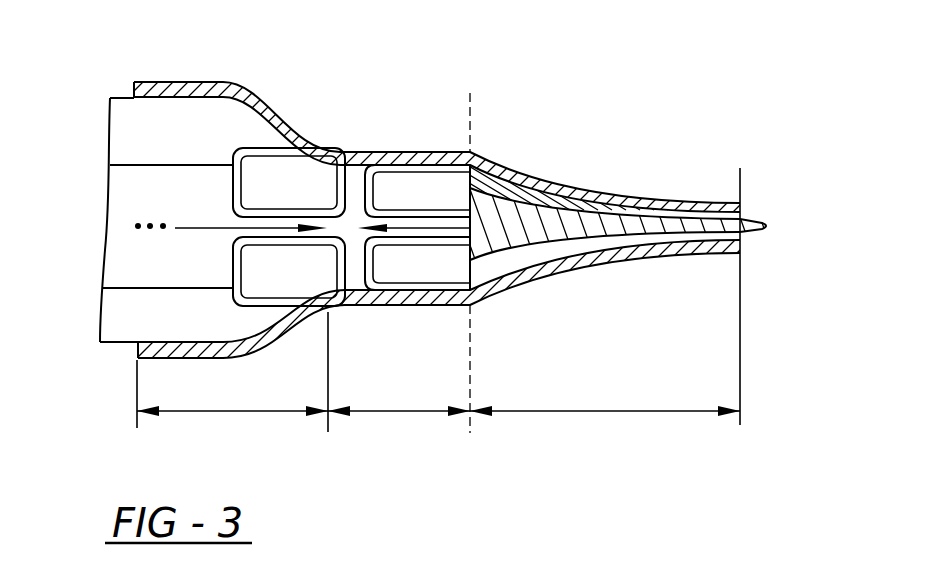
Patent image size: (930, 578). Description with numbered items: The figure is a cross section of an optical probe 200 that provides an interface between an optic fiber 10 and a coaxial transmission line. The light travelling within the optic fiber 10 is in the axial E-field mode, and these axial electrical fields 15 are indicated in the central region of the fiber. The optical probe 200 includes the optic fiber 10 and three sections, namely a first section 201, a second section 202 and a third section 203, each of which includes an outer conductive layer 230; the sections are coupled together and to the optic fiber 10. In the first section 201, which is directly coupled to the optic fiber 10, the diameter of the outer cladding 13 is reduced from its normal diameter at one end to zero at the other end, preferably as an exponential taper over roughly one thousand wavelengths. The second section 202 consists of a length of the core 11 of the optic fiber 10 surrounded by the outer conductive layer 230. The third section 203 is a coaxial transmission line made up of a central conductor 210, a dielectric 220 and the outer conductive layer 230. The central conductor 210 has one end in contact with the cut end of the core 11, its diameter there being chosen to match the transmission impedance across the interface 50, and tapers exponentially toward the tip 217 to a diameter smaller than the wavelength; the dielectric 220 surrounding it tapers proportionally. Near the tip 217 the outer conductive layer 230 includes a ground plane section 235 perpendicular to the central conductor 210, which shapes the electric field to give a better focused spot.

The optic fiber 10 is at (115, 76).
The core 11 is at (95, 229).
The outer cladding 13 is at (95, 133).
The axial electrical fields 15 is at (393, 188).
The interface 50 is at (470, 120).
The optical probe 200 is at (625, 242).
The first section 201 is at (224, 411).
The second section 202 is at (382, 411).
The third section 203 is at (585, 411).
The central conductor 210 is at (578, 232).
The tip 217 is at (792, 214).
The dielectric 220 is at (490, 182).
The outer conductive layer 230 is at (249, 82).
The ground plane section 235 is at (740, 180).